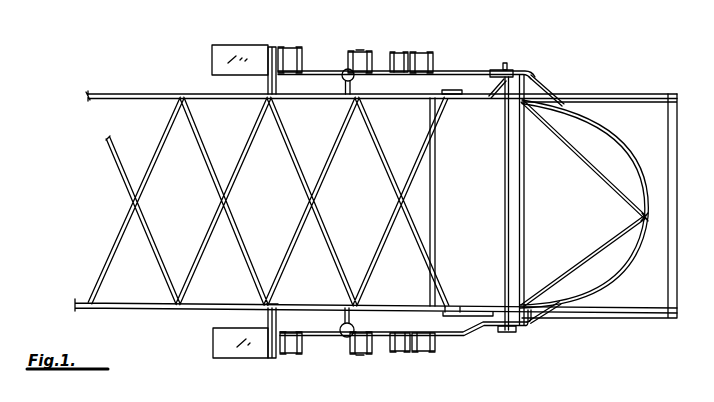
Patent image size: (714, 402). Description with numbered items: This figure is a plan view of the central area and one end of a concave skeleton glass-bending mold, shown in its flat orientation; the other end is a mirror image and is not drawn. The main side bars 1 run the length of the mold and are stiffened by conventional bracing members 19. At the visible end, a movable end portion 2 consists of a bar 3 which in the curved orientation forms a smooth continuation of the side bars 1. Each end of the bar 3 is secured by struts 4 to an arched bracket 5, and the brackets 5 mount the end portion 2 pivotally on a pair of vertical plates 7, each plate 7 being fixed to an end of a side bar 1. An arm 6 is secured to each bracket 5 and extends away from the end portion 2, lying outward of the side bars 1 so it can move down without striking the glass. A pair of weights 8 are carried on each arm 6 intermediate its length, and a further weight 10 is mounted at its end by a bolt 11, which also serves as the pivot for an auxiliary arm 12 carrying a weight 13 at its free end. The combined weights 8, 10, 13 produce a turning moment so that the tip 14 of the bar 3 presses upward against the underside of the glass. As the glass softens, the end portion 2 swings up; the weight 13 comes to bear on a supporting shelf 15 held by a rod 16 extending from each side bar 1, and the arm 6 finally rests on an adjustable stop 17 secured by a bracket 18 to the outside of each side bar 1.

The main side bar 1 is at (153, 94).
The movable end portion 2 is at (607, 285).
The bar 3 is at (597, 122).
The strut 4 is at (543, 84).
The arched bracket 5 is at (496, 76).
The arm 6 is at (465, 72).
The vertical plate 7 is at (517, 71).
The weight 8 is at (432, 52).
The weight 10 is at (375, 54).
The bolt 11 is at (365, 50).
The auxiliary arm 12 is at (318, 70).
The weight 13 is at (296, 56).
The tip 14 is at (647, 228).
The supporting shelf 15 is at (224, 60).
The rod 16 is at (266, 317).
The adjustable stop 17 is at (343, 337).
The bracket 18 is at (351, 318).
The bracing member 19 is at (382, 226).